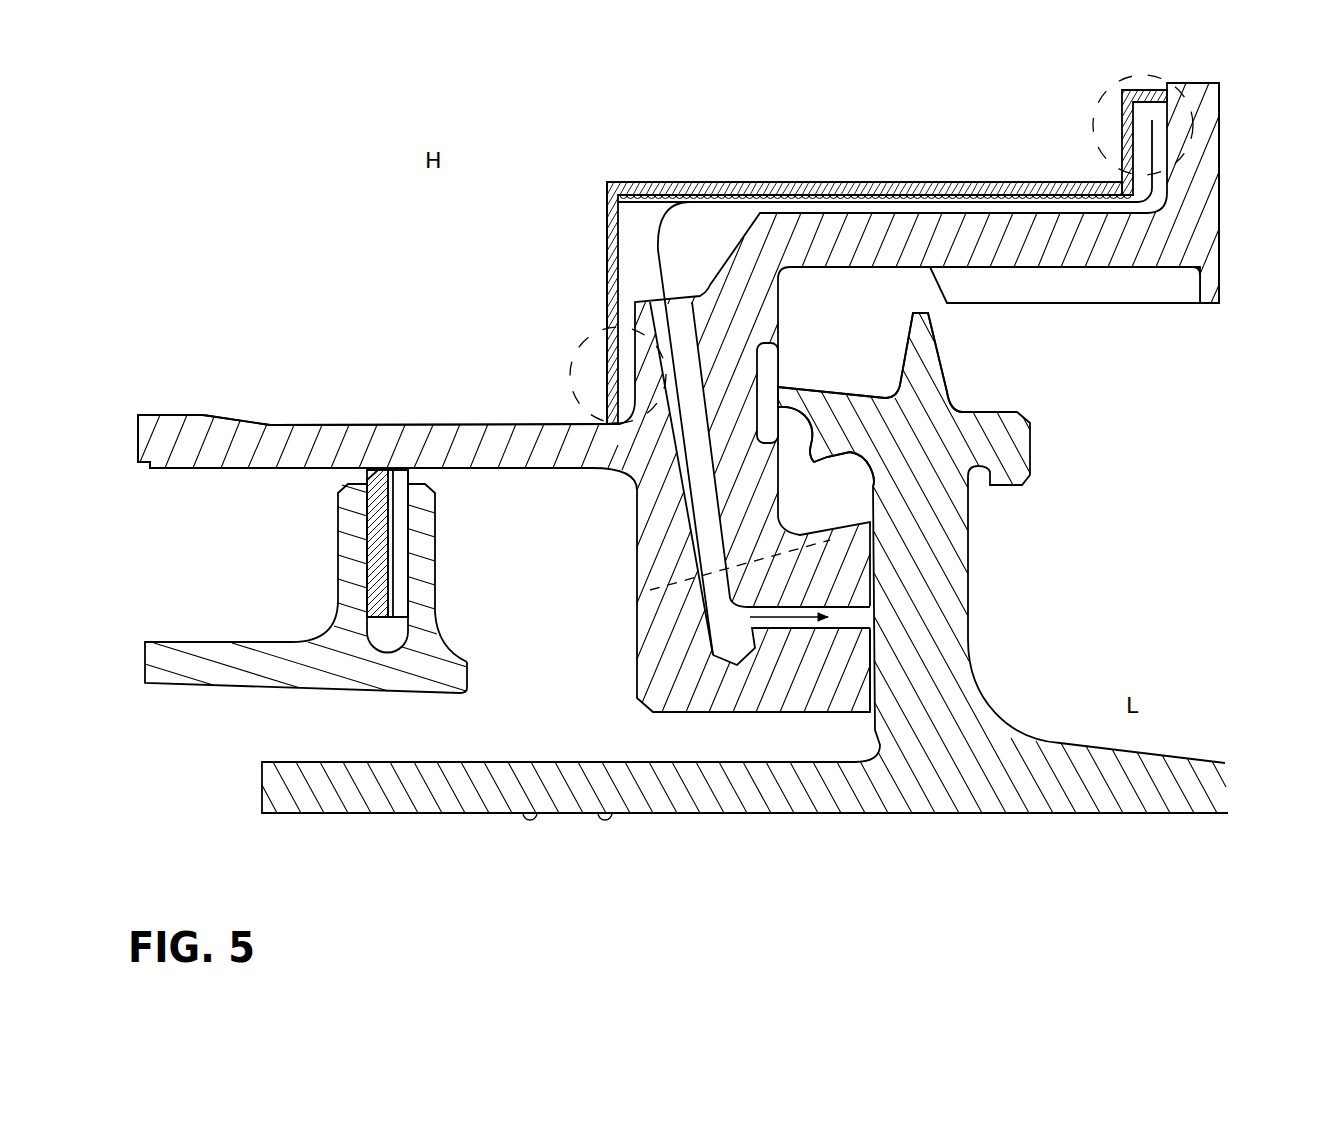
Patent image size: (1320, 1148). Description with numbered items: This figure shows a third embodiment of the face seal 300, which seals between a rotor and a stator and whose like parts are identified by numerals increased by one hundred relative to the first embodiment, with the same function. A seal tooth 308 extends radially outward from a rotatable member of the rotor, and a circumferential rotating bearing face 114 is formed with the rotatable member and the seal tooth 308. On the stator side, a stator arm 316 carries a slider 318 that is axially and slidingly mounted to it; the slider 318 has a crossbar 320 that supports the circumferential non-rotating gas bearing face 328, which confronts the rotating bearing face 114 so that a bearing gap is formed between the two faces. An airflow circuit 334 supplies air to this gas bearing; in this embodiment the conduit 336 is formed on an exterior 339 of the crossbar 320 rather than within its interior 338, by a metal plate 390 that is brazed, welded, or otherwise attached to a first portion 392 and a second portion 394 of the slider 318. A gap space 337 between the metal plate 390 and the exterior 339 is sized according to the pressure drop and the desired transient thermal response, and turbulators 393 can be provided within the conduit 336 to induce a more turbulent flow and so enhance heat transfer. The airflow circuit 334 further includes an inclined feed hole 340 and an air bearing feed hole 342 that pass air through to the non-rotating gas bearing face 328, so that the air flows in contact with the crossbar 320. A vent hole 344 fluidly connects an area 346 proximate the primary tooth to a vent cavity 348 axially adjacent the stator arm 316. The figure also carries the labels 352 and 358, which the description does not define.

The rotating bearing face 114 is at (877, 542).
The face seal 300 is at (926, 103).
The seal tooth 308 is at (808, 418).
The stator arm 316 is at (267, 692).
The slider 318 is at (567, 372).
The crossbar 320 is at (780, 235).
The non-rotating gas bearing face 328 is at (870, 672).
The airflow circuit 334 is at (697, 228).
The conduit 336 is at (935, 190).
The gap space 337 is at (878, 203).
The interior of the crossbar 338 is at (1015, 233).
The exterior of the crossbar 339 is at (815, 210).
The inclined feed hole 340 is at (650, 300).
The air bearing feed hole 342 is at (838, 622).
The vent hole 344 is at (660, 592).
The area proximate the primary tooth 346 is at (835, 509).
The vent cavity 348 is at (498, 598).
The support plate 352 is at (410, 224).
The cooling passage 358 is at (712, 512).
The metal plate 390 is at (1085, 185).
The first portion of the slider 392 is at (1153, 74).
The turbulators 393 is at (650, 202).
The second portion of the slider 394 is at (603, 337).